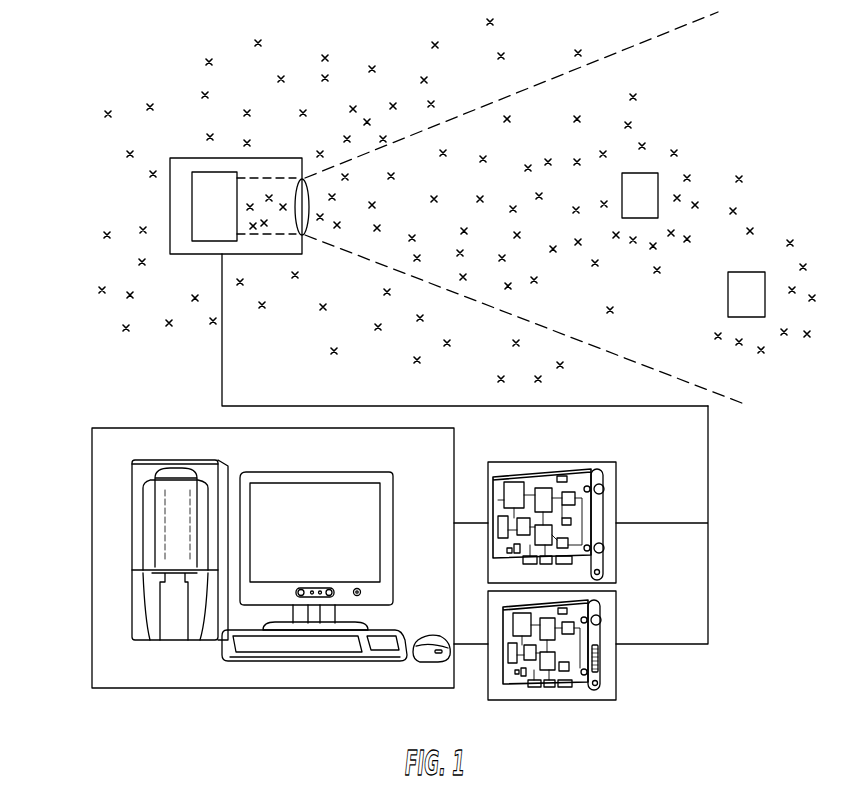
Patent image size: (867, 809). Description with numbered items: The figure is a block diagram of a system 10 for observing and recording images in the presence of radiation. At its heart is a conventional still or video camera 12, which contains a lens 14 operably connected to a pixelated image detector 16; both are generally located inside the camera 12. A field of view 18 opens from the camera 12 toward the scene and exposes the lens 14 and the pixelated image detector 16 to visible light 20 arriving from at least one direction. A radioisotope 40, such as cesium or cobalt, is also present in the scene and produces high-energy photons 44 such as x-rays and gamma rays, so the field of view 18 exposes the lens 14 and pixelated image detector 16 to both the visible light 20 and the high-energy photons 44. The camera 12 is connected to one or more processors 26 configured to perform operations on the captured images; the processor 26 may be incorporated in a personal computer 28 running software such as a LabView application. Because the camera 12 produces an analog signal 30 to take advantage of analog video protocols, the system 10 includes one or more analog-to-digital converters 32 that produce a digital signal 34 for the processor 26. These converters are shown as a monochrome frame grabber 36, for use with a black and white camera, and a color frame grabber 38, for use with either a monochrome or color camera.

The system 10 is at (132, 210).
The camera 12 is at (203, 255).
The lens 14 is at (299, 188).
The pixelated image detector 16 is at (192, 179).
The field of view 18 is at (502, 97).
The visible light 20 is at (541, 106).
The processor 26 is at (132, 538).
The personal computer 28 is at (311, 472).
The analog signal 30 is at (708, 463).
The analog-to-digital converter 32 is at (620, 618).
The digital signal 34 is at (478, 642).
The monochrome frame grabber 36 is at (556, 702).
The color frame grabber 38 is at (567, 462).
The radioisotope 40 is at (622, 190).
The high-energy photons 44 is at (508, 285).